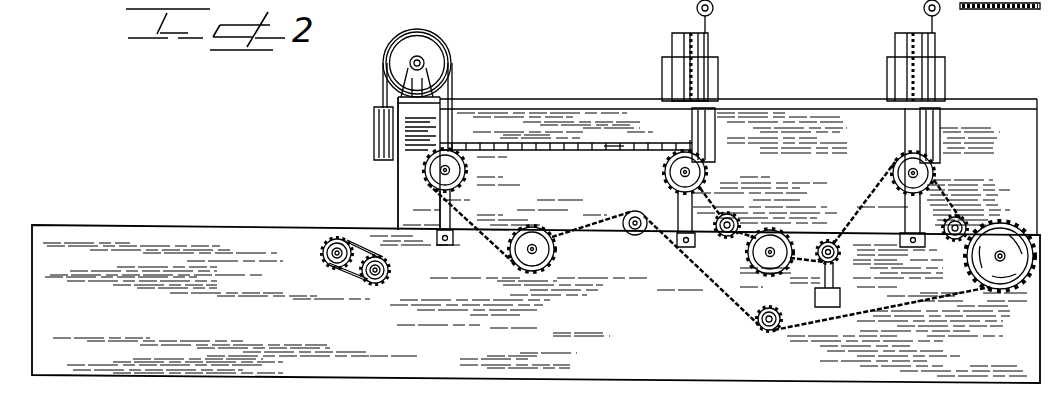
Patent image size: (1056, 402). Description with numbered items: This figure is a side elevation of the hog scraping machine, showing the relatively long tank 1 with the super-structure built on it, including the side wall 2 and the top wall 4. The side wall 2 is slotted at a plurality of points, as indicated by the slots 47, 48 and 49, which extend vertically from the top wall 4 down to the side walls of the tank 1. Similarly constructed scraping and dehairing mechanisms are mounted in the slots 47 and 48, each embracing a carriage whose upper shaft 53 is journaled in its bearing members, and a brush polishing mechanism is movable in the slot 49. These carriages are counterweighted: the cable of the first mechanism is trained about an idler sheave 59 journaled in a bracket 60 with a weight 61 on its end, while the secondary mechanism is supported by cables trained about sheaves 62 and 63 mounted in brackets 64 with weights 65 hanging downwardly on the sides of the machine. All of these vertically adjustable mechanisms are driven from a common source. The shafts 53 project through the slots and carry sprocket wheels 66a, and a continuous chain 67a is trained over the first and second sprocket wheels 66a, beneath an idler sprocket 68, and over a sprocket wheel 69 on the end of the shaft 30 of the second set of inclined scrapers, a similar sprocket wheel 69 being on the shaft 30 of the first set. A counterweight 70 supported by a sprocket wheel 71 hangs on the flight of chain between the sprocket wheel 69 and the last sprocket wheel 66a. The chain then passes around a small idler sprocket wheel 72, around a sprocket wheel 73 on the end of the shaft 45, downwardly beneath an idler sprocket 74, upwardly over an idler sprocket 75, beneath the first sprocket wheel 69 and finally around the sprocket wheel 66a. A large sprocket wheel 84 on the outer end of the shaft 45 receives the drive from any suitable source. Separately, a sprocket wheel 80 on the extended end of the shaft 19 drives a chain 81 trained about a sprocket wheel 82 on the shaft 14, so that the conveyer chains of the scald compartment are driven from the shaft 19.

The tank 1 is at (536, 304).
The side wall 2 is at (603, 189).
The top wall 4 is at (571, 103).
The shaft 14 is at (338, 240).
The shaft 19 is at (375, 284).
The shaft 30 is at (538, 244).
The shaft 45 is at (1000, 262).
The slot 47 is at (452, 136).
The slot 48 is at (680, 126).
The slot 49 is at (915, 135).
The upper shaft 53 is at (455, 171).
The idler sheave 59 is at (402, 60).
The bracket 60 is at (405, 88).
The weight 61 is at (377, 140).
The sheave 62 is at (684, 44).
The sheave 63 is at (706, 44).
The bracket 64 is at (841, 67).
The weight 65 is at (713, 13).
The sprocket wheel 66a is at (428, 172).
The continuous chain 67a is at (613, 150).
The idler sprocket 68 is at (738, 222).
The sprocket wheel 69 is at (548, 258).
The counterweight 70 is at (827, 298).
The sprocket wheel 71 is at (835, 240).
The small idler sprocket wheel 72 is at (962, 222).
The sprocket wheel 73 is at (950, 222).
The idler sprocket 74 is at (755, 322).
The idler sprocket 75 is at (633, 237).
The sprocket wheel 80 is at (400, 0).
The chain 81 is at (352, 310).
The sprocket wheel 82 is at (340, 265).
The large sprocket wheel 84 is at (1020, 10).